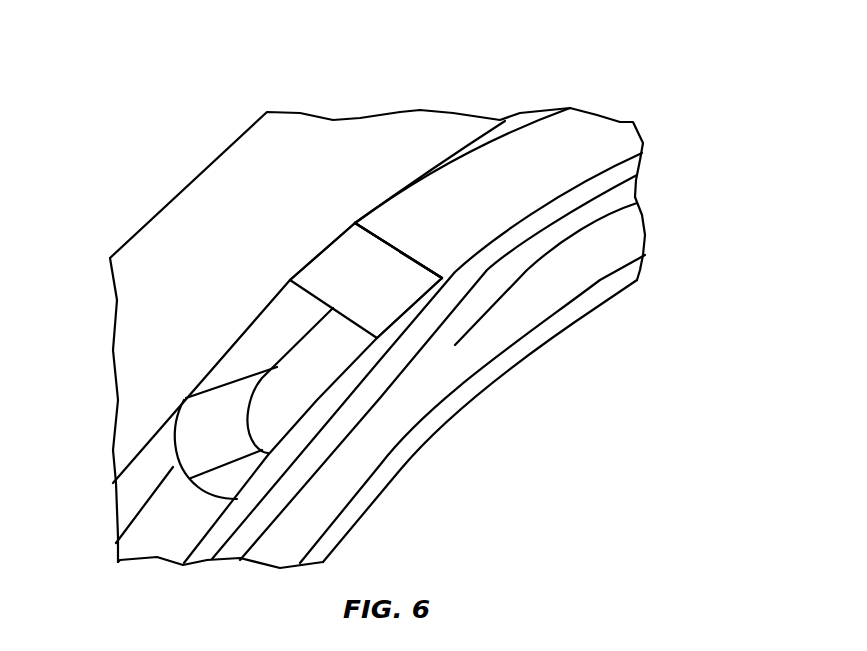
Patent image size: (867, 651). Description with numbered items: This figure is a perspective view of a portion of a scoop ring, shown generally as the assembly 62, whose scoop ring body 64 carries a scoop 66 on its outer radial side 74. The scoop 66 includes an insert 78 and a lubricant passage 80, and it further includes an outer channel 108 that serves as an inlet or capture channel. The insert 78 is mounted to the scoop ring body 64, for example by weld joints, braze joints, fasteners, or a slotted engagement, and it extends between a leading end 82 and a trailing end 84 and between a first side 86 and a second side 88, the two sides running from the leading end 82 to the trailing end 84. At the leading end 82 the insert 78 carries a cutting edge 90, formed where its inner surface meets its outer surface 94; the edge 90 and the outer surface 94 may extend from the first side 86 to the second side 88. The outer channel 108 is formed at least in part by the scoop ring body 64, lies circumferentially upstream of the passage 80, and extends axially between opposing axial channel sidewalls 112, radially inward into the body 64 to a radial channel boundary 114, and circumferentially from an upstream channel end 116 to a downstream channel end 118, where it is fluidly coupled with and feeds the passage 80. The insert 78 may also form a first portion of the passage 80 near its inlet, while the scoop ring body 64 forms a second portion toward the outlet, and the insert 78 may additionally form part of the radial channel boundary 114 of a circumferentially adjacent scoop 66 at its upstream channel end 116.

The housing assembly 62 is at (507, 89).
The scoop ring body 64 is at (362, 200).
The scoop 66 is at (252, 280).
The outer radial side 74 is at (150, 258).
The insert 78 is at (377, 303).
The passage 80 is at (233, 420).
The leading end 82 is at (303, 303).
The trailing end 84 is at (407, 250).
The first side 86 is at (410, 300).
The second side 88 is at (323, 250).
The edge 90 is at (330, 310).
The outer surface 94 is at (370, 252).
The outer channel 108 is at (560, 152).
The axial channel sidewalls 112 is at (447, 140).
The radial channel boundary 114 is at (610, 155).
The upstream channel end 116 is at (427, 260).
The downstream channel end 118 is at (192, 487).